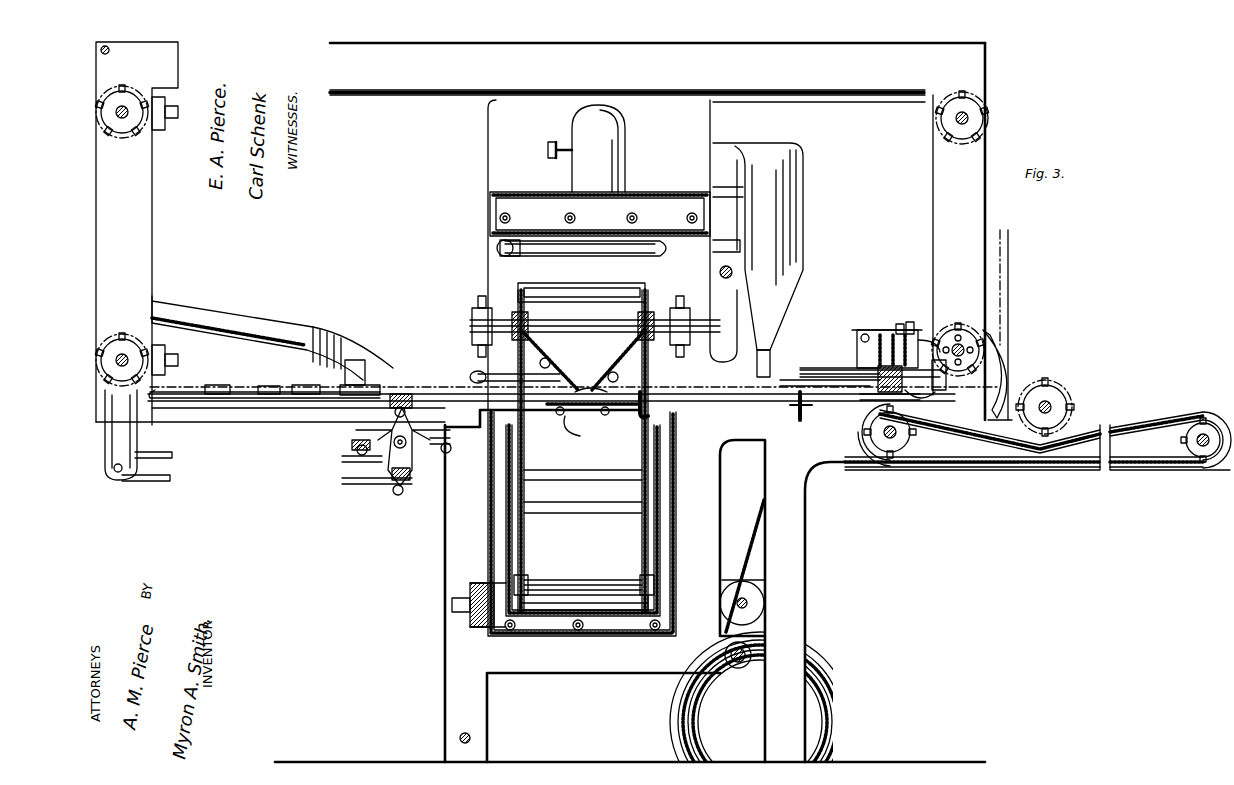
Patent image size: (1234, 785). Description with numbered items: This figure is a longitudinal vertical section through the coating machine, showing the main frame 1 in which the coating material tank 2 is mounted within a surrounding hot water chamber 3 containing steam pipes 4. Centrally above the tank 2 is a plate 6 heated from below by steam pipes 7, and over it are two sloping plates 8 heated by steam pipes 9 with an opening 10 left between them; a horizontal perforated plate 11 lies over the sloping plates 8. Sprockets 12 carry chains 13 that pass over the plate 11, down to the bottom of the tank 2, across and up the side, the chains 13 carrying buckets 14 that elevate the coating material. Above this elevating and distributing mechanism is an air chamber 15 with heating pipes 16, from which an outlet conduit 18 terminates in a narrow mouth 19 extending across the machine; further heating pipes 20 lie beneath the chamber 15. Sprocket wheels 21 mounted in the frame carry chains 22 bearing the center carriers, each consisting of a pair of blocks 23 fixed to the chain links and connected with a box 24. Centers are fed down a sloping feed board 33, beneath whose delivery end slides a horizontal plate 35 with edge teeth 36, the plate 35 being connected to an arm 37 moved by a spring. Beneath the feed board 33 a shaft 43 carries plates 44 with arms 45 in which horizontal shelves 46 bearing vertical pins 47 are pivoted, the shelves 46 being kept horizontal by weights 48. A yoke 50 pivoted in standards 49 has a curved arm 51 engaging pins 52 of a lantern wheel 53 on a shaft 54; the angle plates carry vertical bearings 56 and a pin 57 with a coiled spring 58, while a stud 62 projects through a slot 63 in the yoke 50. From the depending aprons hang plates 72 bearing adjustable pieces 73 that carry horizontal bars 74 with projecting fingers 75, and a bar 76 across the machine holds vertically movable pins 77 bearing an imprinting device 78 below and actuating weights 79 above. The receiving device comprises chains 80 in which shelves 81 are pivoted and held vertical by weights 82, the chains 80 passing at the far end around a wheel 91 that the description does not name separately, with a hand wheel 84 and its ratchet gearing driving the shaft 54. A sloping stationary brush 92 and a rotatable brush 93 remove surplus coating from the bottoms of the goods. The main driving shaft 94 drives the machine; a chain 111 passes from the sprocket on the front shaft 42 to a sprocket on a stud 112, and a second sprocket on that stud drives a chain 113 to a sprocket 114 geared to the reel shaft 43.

The main frame 1 is at (706, 560).
The coating material tank 2 is at (583, 565).
The hot water chamber 3 is at (672, 524).
The steam pipes 4 is at (516, 632).
The plate 6 is at (542, 415).
The steam pipes 7 is at (577, 429).
The sloping plates 8 is at (583, 360).
The steam pipes 9 is at (588, 368).
The opening 10 is at (591, 379).
The perforated plate 11 is at (595, 320).
The sprockets 12 is at (640, 580).
The chains 13 is at (514, 462).
The buckets 14 is at (581, 376).
The air chamber 15 is at (586, 163).
The heating pipes 16 is at (490, 222).
The outlet conduit 18 is at (758, 246).
The narrow mouth 19 is at (757, 370).
The heating pipes 20 is at (490, 255).
The sprocket wheels 21 is at (962, 335).
The chains 22 is at (255, 386).
The blocks 23 is at (262, 404).
The box 24 is at (265, 396).
The sloping feed board 33 is at (272, 339).
The horizontal plate 35 is at (352, 397).
The teeth 36 is at (400, 392).
The arm 37 is at (432, 386).
The shaft 42 is at (150, 360).
The shaft 43 is at (408, 450).
The plates 44 is at (398, 430).
The arms 45 is at (372, 486).
The horizontal shelves 46 is at (355, 452).
The vertical pins 47 is at (358, 440).
The weights 48 is at (398, 496).
The standards 49 is at (864, 340).
The yoke 50 is at (886, 330).
The curved arm 51 is at (942, 330).
The pins 52 is at (1000, 342).
The lantern wheel 53 is at (985, 318).
The shaft 54 is at (1000, 360).
The vertical bearings 56 is at (876, 366).
The pin 57 is at (910, 322).
The spring 58 is at (875, 330).
The stud 62 is at (898, 324).
The slot 63 is at (928, 330).
The plates 72 is at (870, 396).
The adjustable pieces 73 is at (870, 390).
The horizontal bars 74 is at (940, 388).
The fingers 75 is at (875, 404).
The bar 76 is at (800, 380).
The pins 77 is at (933, 375).
The device 78 is at (609, 351).
The actuating weights 79 is at (860, 384).
The chains 80 is at (1020, 468).
The shelves 81 is at (866, 456).
The weights 82 is at (893, 455).
The hand wheel 84 is at (1012, 382).
The sprocket 91 is at (1200, 450).
The stationary brush 92 is at (628, 414).
The rotatable brush 93 is at (798, 418).
The main driving shaft 94 is at (752, 652).
The chain 111 is at (137, 436).
The stud 112 is at (118, 474).
The chain 113 is at (172, 476).
The sprocket 114 is at (386, 486).